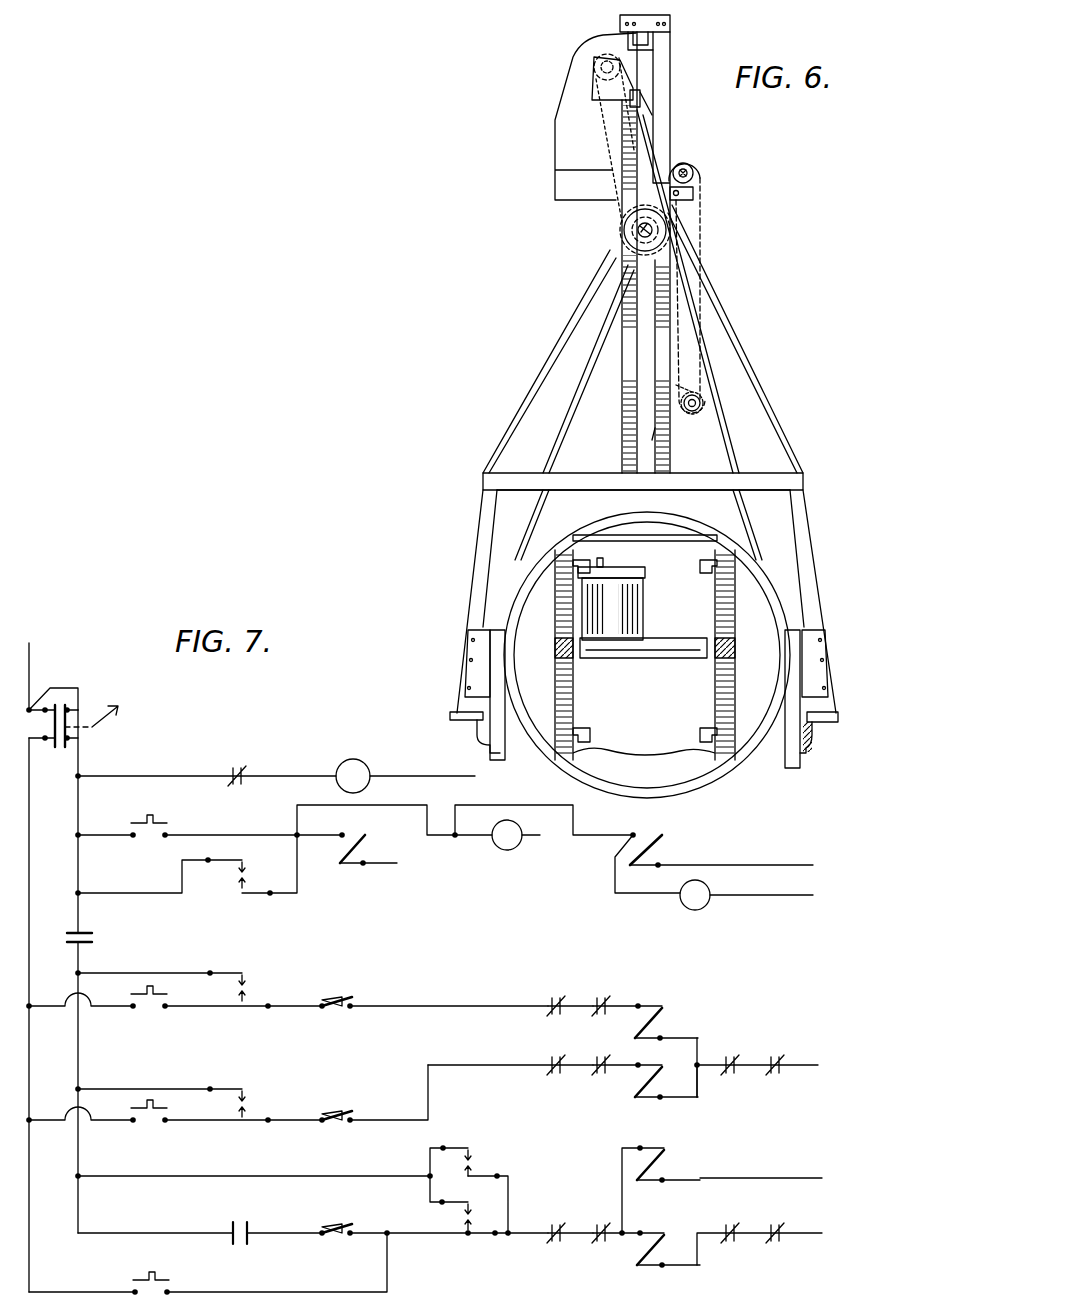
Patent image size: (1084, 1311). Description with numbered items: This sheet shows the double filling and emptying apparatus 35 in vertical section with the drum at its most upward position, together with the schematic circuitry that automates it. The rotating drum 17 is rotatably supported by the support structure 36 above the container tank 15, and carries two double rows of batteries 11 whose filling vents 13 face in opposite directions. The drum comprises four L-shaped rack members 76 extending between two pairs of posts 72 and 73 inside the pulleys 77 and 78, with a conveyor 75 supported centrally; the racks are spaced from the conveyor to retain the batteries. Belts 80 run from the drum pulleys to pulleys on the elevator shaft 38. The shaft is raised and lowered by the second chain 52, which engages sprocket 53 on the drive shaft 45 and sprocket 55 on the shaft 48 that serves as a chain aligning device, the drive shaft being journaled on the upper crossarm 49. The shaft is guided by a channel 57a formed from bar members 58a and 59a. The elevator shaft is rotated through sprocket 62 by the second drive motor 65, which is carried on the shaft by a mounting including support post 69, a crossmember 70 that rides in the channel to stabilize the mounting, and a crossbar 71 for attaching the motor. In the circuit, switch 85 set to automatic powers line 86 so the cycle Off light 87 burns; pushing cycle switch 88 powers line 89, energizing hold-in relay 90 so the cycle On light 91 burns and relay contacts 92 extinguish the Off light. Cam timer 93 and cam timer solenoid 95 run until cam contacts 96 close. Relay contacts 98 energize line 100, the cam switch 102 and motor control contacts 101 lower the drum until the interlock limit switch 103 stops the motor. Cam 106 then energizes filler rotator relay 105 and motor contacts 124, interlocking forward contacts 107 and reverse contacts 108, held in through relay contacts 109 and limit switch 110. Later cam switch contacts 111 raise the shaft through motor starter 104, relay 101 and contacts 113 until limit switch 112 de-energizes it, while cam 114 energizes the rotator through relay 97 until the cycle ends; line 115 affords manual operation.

In FIG. 6, the batteries 11 is at (628, 598).
In FIG. 6, the filling vents 13 is at (603, 560).
In FIG. 6, the container tank 15 is at (814, 746).
In FIG. 6, the rotating drum 17 is at (794, 584).
In FIG. 6, the double filling and emptying apparatus 35 is at (538, 352).
In FIG. 6, the support structure 36 is at (528, 403).
In FIG. 6, the elevator shaft 38 is at (640, 228).
In FIG. 6, the drive shaft 45 is at (699, 176).
In FIG. 6, the shaft 48 is at (703, 405).
In FIG. 6, the crossarm 49 is at (694, 196).
In FIG. 6, the second chain 52 is at (703, 246).
In FIG. 6, the sprocket 53 is at (692, 165).
In FIG. 6, the sprocket 55 is at (691, 388).
In FIG. 6, the channel 57a is at (653, 108).
In FIG. 6, the bar member 58a is at (622, 462).
In FIG. 6, the bar member 59a is at (670, 458).
In FIG. 6, the sprocket 62 is at (624, 236).
In FIG. 6, the second drive motor 65 is at (556, 137).
In FIG. 6, the support post 69 is at (669, 58).
In FIG. 6, the crossmember 70 is at (671, 22).
In FIG. 6, the crossbar 71 is at (648, 95).
In FIG. 6, the posts 72 is at (562, 684).
In FIG. 6, the posts 73 is at (730, 698).
In FIG. 6, the conveyor 75 is at (668, 650).
In FIG. 6, the L-shaped rack members 76 is at (585, 560).
In FIG. 6, the pulley 77 is at (779, 600).
In FIG. 6, the pulley 78 is at (584, 518).
In FIG. 6, the belts 80 is at (542, 511).
In FIG. 7, the switch 85 is at (82, 712).
In FIG. 7, the line 86 is at (83, 770).
In FIG. 7, the cycle Off light 87 is at (352, 769).
In FIG. 7, the cycle switch 88 is at (166, 829).
In FIG. 7, the line 89 is at (260, 834).
In FIG. 7, the hold-in relay 90 is at (656, 846).
In FIG. 7, the cycle On light 91 is at (704, 901).
In FIG. 7, the relay contacts 92 is at (244, 772).
In FIG. 7, the cam timer 93 is at (512, 845).
In FIG. 7, the cam timer solenoid 95 is at (366, 845).
In FIG. 7, the cam contacts 96 is at (246, 876).
In FIG. 7, the relay 97 is at (664, 1156).
In FIG. 7, the relay contacts 98 is at (88, 936).
In FIG. 7, the line 100 is at (165, 972).
In FIG. 7, the motor control contacts 101 is at (660, 1006).
In FIG. 7, the cam switch 102 is at (247, 990).
In FIG. 7, the interlock limit switch 103 is at (346, 998).
In FIG. 7, the motor starter 104 is at (550, 997).
In FIG. 7, the filler rotator relay 105 is at (607, 995).
In FIG. 7, the cam 106 is at (458, 1218).
In FIG. 7, the forward contacts 107 is at (548, 1252).
In FIG. 7, the reverse contacts 108 is at (602, 1224).
In FIG. 7, the relay contacts 109 is at (249, 1228).
In FIG. 7, the limit switch 110 is at (338, 1226).
In FIG. 7, the cam switch contacts 111 is at (247, 1105).
In FIG. 7, the limit switch 112 is at (343, 1112).
In FIG. 7, the contacts 113 is at (603, 1078).
In FIG. 7, the cam 114 is at (476, 1163).
In FIG. 7, the line 115 is at (31, 882).
In FIG. 7, the filler rotator motor contacts 124 is at (640, 1258).